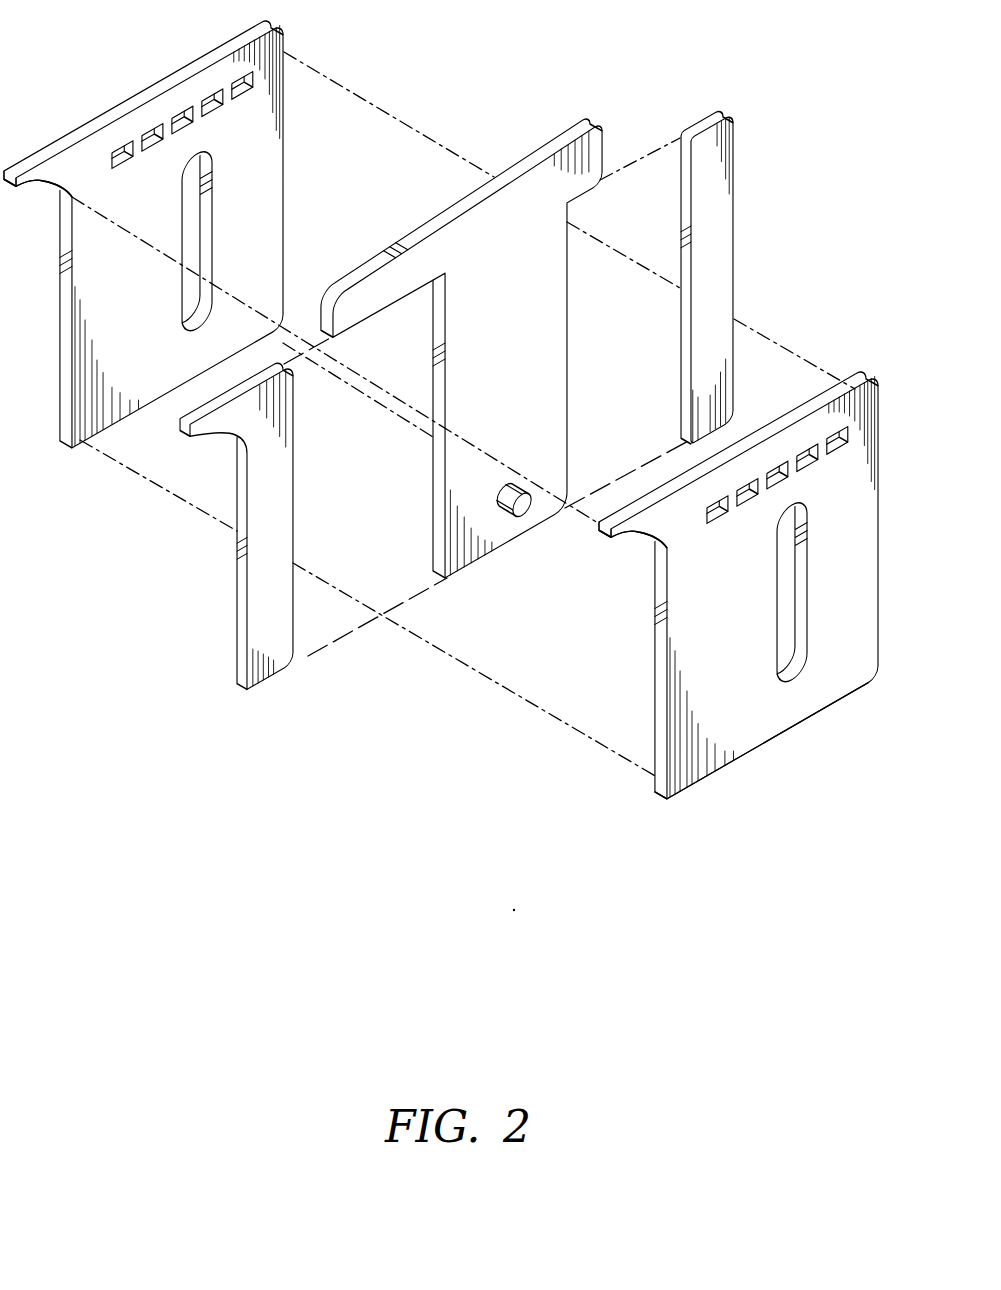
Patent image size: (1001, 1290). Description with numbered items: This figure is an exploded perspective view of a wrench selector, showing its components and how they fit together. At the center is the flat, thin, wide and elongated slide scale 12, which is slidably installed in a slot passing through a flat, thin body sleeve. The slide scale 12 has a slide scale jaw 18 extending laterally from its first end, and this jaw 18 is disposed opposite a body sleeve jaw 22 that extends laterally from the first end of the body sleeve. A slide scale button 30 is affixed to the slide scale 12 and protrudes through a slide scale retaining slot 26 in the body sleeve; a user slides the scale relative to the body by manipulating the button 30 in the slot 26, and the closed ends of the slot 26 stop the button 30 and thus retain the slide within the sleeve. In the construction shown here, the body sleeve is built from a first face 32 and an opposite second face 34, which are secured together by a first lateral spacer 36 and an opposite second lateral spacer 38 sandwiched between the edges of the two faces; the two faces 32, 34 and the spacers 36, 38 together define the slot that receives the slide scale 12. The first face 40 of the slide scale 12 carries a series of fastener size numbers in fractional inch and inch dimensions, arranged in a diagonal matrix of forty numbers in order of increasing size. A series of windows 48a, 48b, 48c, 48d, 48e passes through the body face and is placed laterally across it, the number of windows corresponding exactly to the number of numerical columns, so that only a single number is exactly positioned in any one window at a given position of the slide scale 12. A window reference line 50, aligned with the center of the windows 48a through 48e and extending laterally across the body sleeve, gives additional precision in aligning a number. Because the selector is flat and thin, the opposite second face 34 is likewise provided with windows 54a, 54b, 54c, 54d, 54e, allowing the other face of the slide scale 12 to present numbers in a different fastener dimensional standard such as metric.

The slide scale 12 is at (567, 317).
The slide scale jaw 18 is at (352, 275).
The body sleeve jaw 22 is at (24, 184).
The slide scale retaining slot 26 is at (198, 229).
The slide scale button 30 is at (522, 516).
The first face 32 is at (661, 802).
The second face 34 is at (72, 449).
The first lateral spacer 36 is at (238, 586).
The second lateral spacer 38 is at (735, 272).
The first face of the slide scale 40 is at (533, 434).
The window 48a is at (707, 510).
The window 48b is at (762, 526).
The window 48c is at (773, 488).
The window 48d is at (803, 464).
The window 48e is at (829, 457).
The window reference line 50 is at (857, 428).
The window 54a is at (112, 147).
The window 54b is at (143, 147).
The window 54c is at (173, 115).
The window 54d is at (205, 93).
The window 54e is at (236, 80).